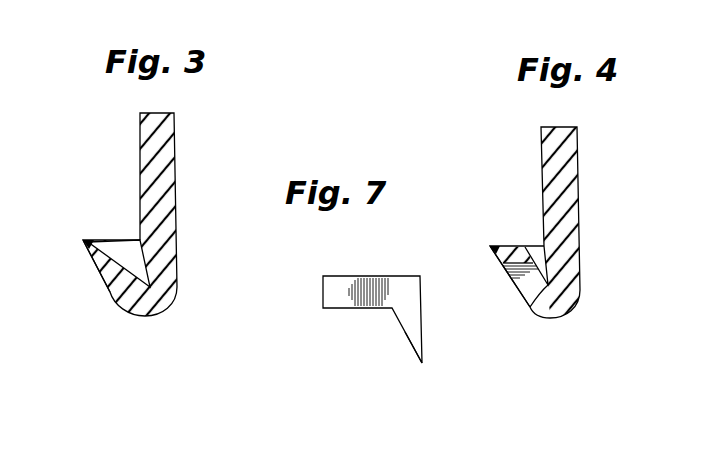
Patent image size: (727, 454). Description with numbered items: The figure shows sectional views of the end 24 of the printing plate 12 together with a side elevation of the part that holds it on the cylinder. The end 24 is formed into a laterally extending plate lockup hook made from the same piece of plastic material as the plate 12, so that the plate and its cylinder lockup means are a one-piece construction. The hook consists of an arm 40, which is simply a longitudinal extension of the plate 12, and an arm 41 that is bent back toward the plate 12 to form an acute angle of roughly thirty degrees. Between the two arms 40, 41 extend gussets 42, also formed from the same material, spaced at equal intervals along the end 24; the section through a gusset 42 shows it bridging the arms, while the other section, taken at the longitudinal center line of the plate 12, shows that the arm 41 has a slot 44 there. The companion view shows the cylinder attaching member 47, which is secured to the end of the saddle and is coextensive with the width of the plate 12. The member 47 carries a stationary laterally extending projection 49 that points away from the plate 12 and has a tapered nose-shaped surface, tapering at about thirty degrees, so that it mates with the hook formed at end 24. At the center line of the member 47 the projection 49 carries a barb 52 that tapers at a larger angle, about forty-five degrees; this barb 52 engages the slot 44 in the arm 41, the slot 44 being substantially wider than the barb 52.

In FIG. 3, the printing plate 12 is at (173, 143).
In FIG. 4, the printing plate 12 is at (577, 147).
In FIG. 3, the end of plate 24 is at (134, 230).
In FIG. 4, the end of plate 24 is at (534, 216).
In FIG. 3, the arm 40 is at (180, 268).
In FIG. 4, the arm 40 is at (585, 278).
In FIG. 3, the arm 41 is at (112, 294).
In FIG. 4, the arm 41 is at (492, 257).
In FIG. 3, the gusset 42 is at (128, 238).
In FIG. 4, the gusset 42 is at (533, 245).
In FIG. 4, the slot 44 is at (538, 305).
In FIG. 7, the cylinder attaching member 47 is at (382, 275).
In FIG. 7, the stationary laterally extending projection 49 is at (413, 323).
In FIG. 7, the barb 52 is at (399, 337).